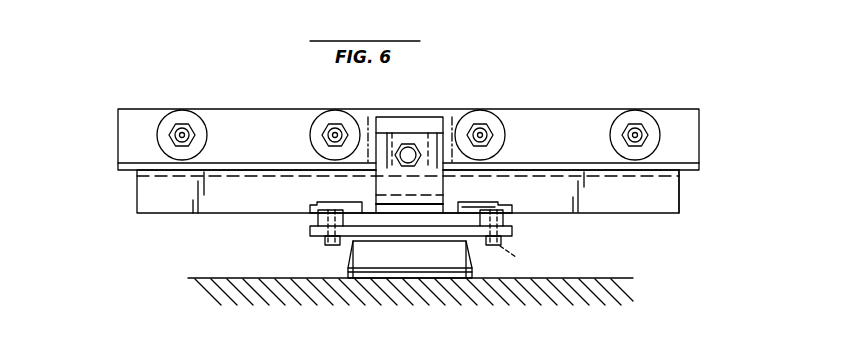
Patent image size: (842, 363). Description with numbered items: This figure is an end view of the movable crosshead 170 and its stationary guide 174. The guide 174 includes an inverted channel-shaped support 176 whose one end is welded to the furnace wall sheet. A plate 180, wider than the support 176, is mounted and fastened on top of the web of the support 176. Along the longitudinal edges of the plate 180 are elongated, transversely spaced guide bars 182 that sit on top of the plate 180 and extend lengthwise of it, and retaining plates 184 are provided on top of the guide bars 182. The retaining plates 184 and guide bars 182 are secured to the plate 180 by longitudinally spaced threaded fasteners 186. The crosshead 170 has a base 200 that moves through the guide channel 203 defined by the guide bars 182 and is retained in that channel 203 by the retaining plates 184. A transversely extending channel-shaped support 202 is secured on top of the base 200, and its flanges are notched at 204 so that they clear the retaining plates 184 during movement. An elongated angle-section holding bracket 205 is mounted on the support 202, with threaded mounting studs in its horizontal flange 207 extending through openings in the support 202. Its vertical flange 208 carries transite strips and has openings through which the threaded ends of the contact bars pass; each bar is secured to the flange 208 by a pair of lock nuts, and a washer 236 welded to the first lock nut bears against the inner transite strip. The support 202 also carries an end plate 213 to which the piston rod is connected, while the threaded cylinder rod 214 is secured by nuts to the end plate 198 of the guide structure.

The crosshead 170 is at (135, 197).
The stationary guide 174 is at (560, 258).
The inverted channel-shaped support 176 is at (352, 250).
The plate 180 is at (505, 235).
The guide bars 182 is at (325, 224).
The retaining plates 184 is at (318, 217).
The threaded fasteners 186 is at (525, 257).
The end plate 198 is at (562, 97).
The base 200 is at (343, 232).
The channel-shaped support 202 is at (680, 201).
The guide channel 203 is at (462, 233).
The notch 204 is at (327, 203).
The holding bracket 205 is at (118, 142).
The horizontal flange 207 is at (118, 166).
The vertical flange 208 is at (133, 115).
The end plate 213 is at (440, 206).
The threaded cylinder rod 214 is at (409, 148).
The washer 236 is at (310, 130).